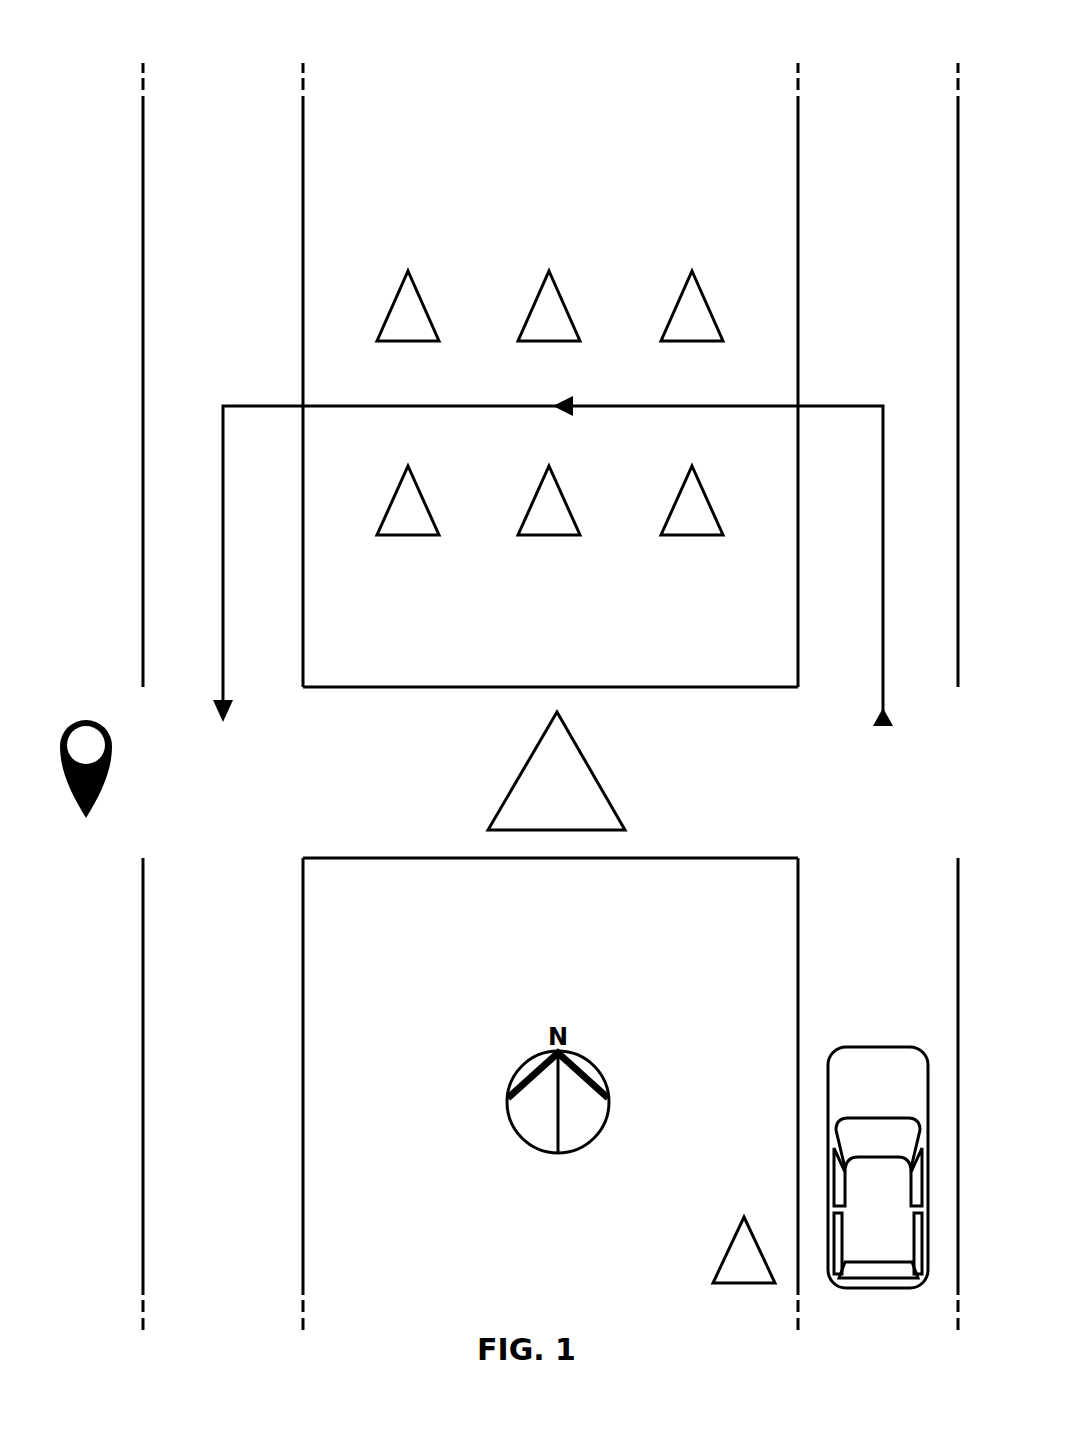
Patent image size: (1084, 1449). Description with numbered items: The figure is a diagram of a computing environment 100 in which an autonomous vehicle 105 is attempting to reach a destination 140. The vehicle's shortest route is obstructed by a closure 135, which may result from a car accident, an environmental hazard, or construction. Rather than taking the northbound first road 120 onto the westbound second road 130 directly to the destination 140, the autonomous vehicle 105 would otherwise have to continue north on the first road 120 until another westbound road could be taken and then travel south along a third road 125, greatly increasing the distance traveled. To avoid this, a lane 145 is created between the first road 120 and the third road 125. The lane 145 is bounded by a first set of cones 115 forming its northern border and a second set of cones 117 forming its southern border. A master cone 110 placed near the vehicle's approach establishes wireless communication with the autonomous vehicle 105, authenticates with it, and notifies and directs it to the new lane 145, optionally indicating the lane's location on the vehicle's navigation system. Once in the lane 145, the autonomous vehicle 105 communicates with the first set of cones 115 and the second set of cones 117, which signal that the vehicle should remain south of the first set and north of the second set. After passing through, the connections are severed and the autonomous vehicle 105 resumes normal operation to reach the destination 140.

The computing environment 100 is at (643, 62).
The autonomous vehicle 105 is at (860, 1187).
The master cone 110 is at (745, 1262).
The first set of cones 115 is at (675, 297).
The second set of cones 117 is at (685, 535).
The first road 120 is at (809, 208).
The third road 125 is at (283, 165).
The second road 130 is at (656, 717).
The closure 135 is at (522, 761).
The destination 140 is at (86, 740).
The lane 145 is at (633, 382).